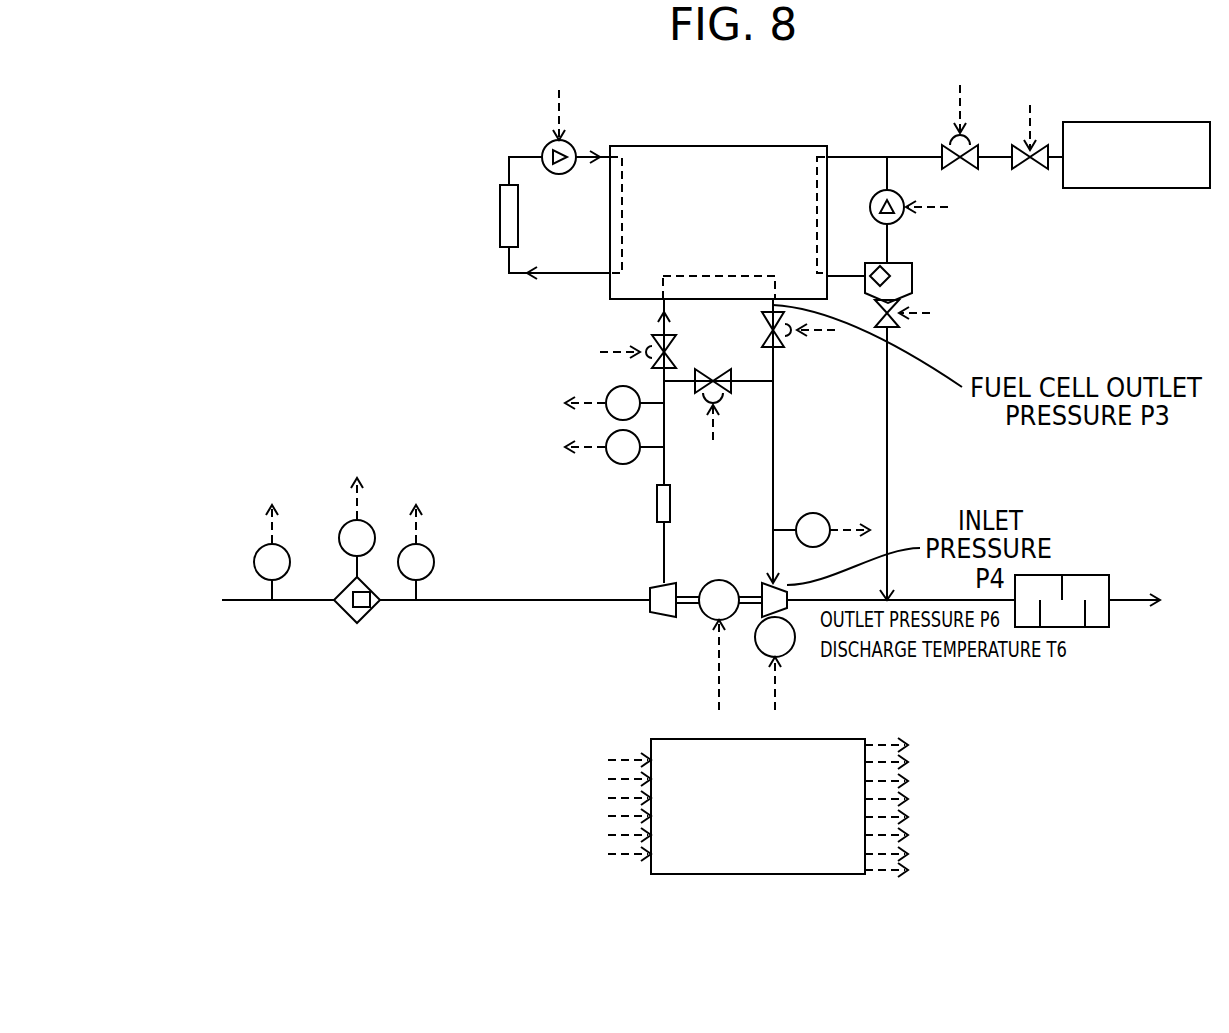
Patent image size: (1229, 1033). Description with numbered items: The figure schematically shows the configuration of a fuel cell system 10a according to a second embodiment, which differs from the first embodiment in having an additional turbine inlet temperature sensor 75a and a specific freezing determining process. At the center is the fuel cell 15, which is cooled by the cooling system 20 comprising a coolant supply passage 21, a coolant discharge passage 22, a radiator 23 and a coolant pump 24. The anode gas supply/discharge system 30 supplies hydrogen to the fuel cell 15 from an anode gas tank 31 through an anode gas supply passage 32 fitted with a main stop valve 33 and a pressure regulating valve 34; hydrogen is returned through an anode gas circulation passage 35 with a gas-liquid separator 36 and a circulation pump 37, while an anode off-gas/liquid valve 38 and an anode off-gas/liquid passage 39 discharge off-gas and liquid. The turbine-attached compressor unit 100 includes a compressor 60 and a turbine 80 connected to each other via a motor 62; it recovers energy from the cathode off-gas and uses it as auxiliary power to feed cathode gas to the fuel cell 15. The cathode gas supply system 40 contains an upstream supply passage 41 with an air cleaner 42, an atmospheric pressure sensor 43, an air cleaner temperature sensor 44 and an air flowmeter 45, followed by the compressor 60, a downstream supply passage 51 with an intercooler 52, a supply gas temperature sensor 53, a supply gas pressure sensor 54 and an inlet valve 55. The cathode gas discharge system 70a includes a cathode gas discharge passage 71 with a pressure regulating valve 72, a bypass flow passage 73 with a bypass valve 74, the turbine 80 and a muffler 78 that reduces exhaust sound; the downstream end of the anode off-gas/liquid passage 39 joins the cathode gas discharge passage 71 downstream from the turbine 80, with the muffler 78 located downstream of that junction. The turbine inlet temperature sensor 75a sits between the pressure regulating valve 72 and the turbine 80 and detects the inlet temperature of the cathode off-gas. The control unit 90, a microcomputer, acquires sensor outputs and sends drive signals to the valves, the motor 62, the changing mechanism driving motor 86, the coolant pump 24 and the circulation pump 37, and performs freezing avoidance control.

The fuel cell system 10a is at (159, 119).
The fuel cell 15 is at (718, 198).
The cooling system 20 is at (469, 111).
The coolant supply passage 21 is at (559, 143).
The coolant discharge passage 22 is at (559, 293).
The radiator 23 is at (478, 216).
The coolant pump 24 is at (582, 132).
The anode gas supply/discharge system 30 is at (1085, 270).
The anode gas tank 31 is at (1136, 129).
The anode gas supply passage 32 is at (945, 124).
The main stop valve 33 is at (1035, 164).
The pressure regulating valve 34 is at (939, 127).
The anode gas circulation passage 35 is at (857, 216).
The gas-liquid separator 36 is at (931, 279).
The circulation pump 37 is at (909, 196).
The anode off-gas/liquid valve 38 is at (912, 337).
The anode off-gas/liquid passage 39 is at (920, 463).
The cathode gas supply system 40 is at (305, 337).
The upstream supply passage 41 is at (436, 568).
The air cleaner 42 is at (357, 625).
The atmospheric pressure sensor 43 is at (251, 552).
The air cleaner temperature sensor 44 is at (339, 527).
The air flowmeter 45 is at (448, 552).
The downstream supply passage 51 is at (628, 441).
The intercooler 52 is at (692, 496).
The supply gas temperature sensor 53 is at (608, 458).
The supply gas pressure sensor 54 is at (609, 388).
The inlet valve 55 is at (638, 337).
The compressor 60 is at (660, 628).
The motor 62 is at (719, 620).
The cathode gas discharge system 70a is at (971, 487).
The cathode gas discharge passage 71 is at (802, 441).
The pressure regulating valve 72 is at (801, 349).
The bypass flow passage 73 is at (718, 412).
The bypass valve 74 is at (718, 382).
The turbine inlet temperature sensor 75a is at (829, 514).
The muffler 78 is at (1087, 566).
The turbine 80 is at (803, 594).
The changing mechanism driving motor 86 is at (788, 663).
The control unit 90 is at (758, 793).
The turbine-attached compressor unit 100 is at (585, 656).